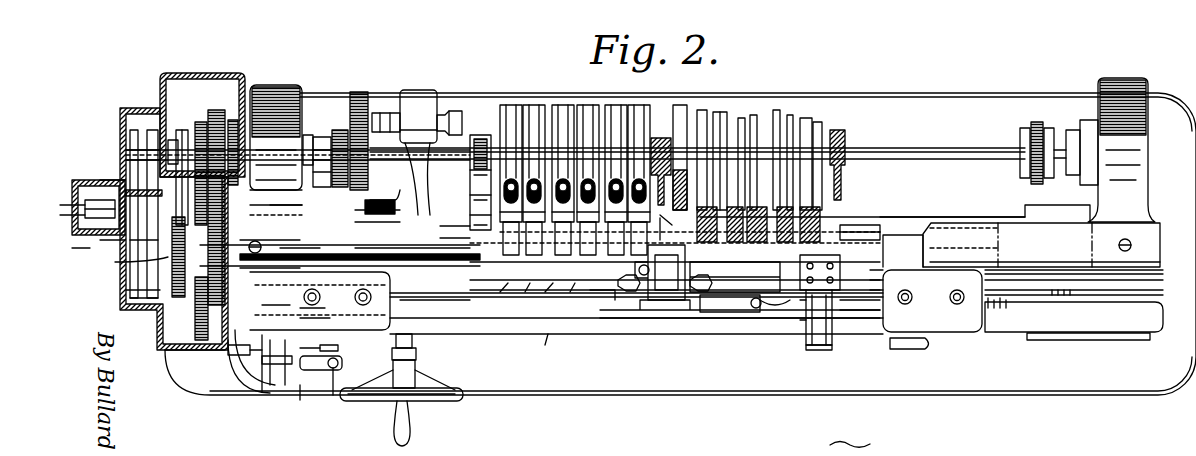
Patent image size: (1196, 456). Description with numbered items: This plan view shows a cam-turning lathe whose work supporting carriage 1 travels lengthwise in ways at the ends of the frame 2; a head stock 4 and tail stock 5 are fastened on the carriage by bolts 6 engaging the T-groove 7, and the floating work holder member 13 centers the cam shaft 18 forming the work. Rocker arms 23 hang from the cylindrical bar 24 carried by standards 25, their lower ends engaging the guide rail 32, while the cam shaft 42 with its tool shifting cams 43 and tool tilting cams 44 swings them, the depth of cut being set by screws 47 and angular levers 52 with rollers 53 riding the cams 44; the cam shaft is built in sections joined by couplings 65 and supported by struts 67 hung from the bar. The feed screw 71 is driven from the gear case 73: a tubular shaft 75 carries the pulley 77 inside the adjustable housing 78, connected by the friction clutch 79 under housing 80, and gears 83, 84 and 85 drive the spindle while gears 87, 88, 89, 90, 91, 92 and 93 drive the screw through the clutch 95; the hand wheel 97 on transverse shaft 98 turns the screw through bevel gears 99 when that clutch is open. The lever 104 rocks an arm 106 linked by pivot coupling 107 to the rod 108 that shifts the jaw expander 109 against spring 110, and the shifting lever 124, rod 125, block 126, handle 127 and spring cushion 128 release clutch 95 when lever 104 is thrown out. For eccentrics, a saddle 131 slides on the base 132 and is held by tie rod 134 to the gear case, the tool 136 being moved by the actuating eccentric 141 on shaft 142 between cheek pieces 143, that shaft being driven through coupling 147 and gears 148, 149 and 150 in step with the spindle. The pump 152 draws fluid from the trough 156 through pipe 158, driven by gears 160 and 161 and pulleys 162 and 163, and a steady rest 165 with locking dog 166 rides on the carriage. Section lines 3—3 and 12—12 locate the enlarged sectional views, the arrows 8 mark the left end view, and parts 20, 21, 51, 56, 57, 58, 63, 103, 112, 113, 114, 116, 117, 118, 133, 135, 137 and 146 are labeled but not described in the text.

The work supporting carriage 1 is at (470, 334).
The frame 2 is at (1058, 346).
The section line 3— 3 is at (693, 375).
The head stock 4 is at (620, 375).
The tail stock 5 is at (932, 292).
The bolts 6 is at (493, 415).
The T-groove 7 is at (573, 410).
The section line 8- 8 is at (153, 380).
The section line 12— 12 is at (822, 285).
The work holder member 13 is at (515, 296).
The cam shaft 18 is at (675, 257).
The stop block 20 is at (855, 240).
The scale 21 is at (996, 272).
The rocker arms 23 is at (820, 225).
The cylindrical bar 24 is at (799, 245).
The standards 25 is at (275, 85).
The guide rail 32 is at (922, 217).
The cam shaft 42 is at (922, 148).
The tool operating or shifting cams 43 is at (640, 125).
The tool tilting or adjusting cams 44 is at (478, 128).
The screws 47 is at (559, 296).
The lever 51 is at (560, 105).
The angular levers 52 is at (614, 105).
The cam rollers 53 is at (510, 105).
The bushing 56 is at (472, 193).
The pin 57 is at (478, 205).
The lever 58 is at (839, 443).
The lever 63 is at (676, 108).
The couplings 65 is at (310, 135).
The struts or braces 67 is at (474, 172).
The feed screw 71 is at (303, 208).
The gear case 73 is at (205, 74).
The tubular shaft 75 is at (275, 202).
The pulley 77 is at (120, 150).
The housing 78 is at (140, 108).
The friction clutch 79 is at (115, 245).
The housing 80 is at (82, 180).
The gear 83 is at (175, 140).
The gear 84 is at (245, 183).
The gear 85 is at (193, 308).
The gear 87 is at (217, 110).
The gear 88 is at (202, 122).
The gear 89 is at (182, 130).
The gear 90 is at (128, 151).
The gear 91 is at (132, 269).
The gear 92 is at (110, 168).
The gear 93 is at (129, 291).
The clutch 95 is at (183, 262).
The hand wheel 97 is at (430, 401).
The transverse shaft 98 is at (412, 349).
The bevel gears 99 is at (435, 302).
The bracket 103 is at (320, 299).
The lever 104 is at (300, 400).
The arm 106 is at (384, 194).
The adjustable pivot coupling 107 is at (412, 236).
The rod 108 is at (300, 236).
The jaw expander 109 is at (72, 254).
The spring 110 is at (388, 210).
The cylinder 112 is at (312, 370).
The pin 113 is at (338, 348).
The rod 114 is at (280, 364).
The block 116 is at (238, 355).
The pin 117 is at (281, 305).
The link 118 is at (250, 370).
The shifting lever 124 is at (190, 350).
The rod 125 is at (285, 385).
The block 126 is at (330, 387).
The handle 127 is at (386, 423).
The spring cushion 128 is at (262, 374).
The saddle 131 is at (785, 300).
The base 132 is at (328, 318).
The pin 133 is at (322, 308).
The tie rod 134 is at (750, 273).
The bar 135 is at (865, 310).
The tool 136 is at (769, 298).
The bracket 137 is at (665, 271).
The actuating eccentric 141 is at (795, 329).
The shaft 142 is at (533, 347).
The cheek pieces 143 is at (833, 347).
The hub 146 is at (286, 202).
The angularly adjustable coupling 147 is at (245, 385).
The driving gear 148 is at (222, 372).
The idle gear 149 is at (329, 287).
The gear 150 is at (270, 245).
The pump 152 is at (418, 92).
The trough 156 is at (886, 93).
The pipe 158 is at (454, 116).
The gear 160 is at (317, 162).
The gear 161 is at (338, 130).
The pulley 162 is at (358, 92).
The pulley 163 is at (380, 113).
The steady rest 165 is at (663, 218).
The dog 166 is at (652, 282).